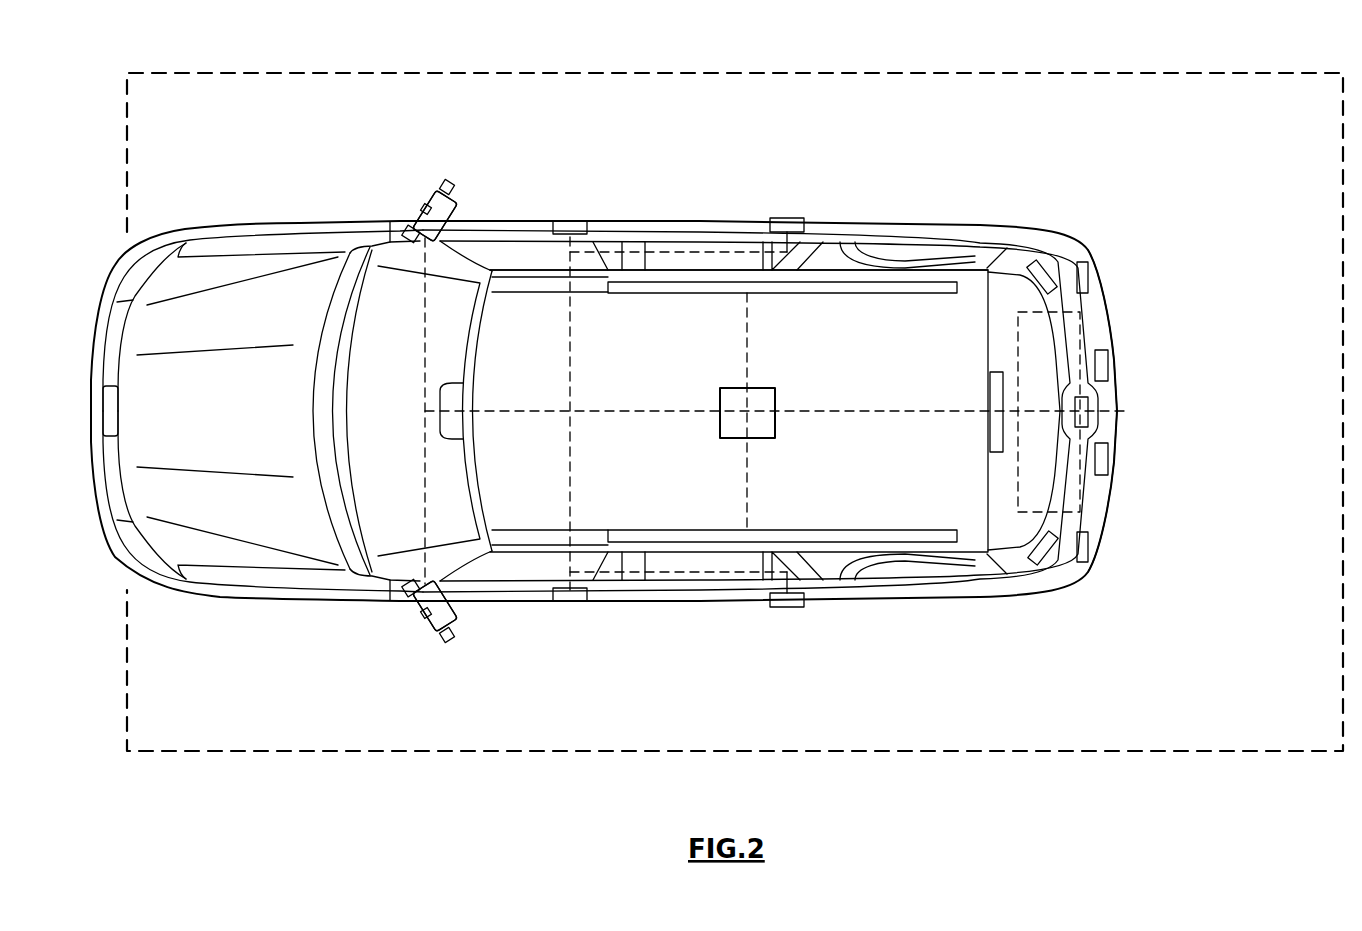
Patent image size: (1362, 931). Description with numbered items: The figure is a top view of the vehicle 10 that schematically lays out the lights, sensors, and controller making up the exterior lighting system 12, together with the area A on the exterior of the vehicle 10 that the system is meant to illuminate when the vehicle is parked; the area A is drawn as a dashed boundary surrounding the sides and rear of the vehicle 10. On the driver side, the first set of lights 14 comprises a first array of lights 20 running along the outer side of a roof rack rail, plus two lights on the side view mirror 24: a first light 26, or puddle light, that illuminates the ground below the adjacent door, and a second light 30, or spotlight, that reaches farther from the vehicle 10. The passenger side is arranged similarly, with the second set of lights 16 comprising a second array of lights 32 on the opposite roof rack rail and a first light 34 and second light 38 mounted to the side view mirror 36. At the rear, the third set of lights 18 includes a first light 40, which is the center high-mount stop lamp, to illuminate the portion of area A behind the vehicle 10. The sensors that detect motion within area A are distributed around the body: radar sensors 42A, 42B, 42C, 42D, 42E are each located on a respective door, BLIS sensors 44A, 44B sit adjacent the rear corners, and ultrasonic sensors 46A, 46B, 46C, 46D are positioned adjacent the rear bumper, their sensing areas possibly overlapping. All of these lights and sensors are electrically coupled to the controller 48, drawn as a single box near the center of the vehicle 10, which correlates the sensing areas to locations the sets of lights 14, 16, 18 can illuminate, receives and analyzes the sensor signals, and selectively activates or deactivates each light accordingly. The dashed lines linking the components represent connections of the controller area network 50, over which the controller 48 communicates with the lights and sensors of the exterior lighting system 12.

The area A is at (1311, 73).
The vehicle 10 is at (262, 185).
The exterior lighting system 12 is at (400, 165).
The first set of lights 14 is at (370, 650).
The second set of lights 16 is at (850, 170).
The third set of lights 18 is at (1200, 382).
The first array of lights 20 is at (900, 537).
The side view mirror 24 is at (460, 614).
The first light 26 is at (425, 618).
The second light 30 is at (452, 643).
The second array of lights 32 is at (688, 285).
The first light 34 is at (421, 209).
The side view mirror 36 is at (455, 212).
The second light 38 is at (449, 184).
The first light 40 is at (997, 385).
The radar sensor 42A is at (575, 602).
The radar sensor 42B is at (788, 607).
The radar sensor 42C is at (1090, 412).
The radar sensor 42D is at (787, 218).
The radar sensor 42E is at (570, 221).
The BLIS sensor 44A is at (1050, 560).
The BLIS sensor 44B is at (1042, 270).
The ultrasonic sensor 46A is at (1085, 547).
The ultrasonic sensor 46B is at (1105, 460).
The ultrasonic sensor 46C is at (1105, 366).
The ultrasonic sensor 46D is at (1085, 278).
The controller 48 is at (747, 413).
The controller area network 50 is at (748, 332).